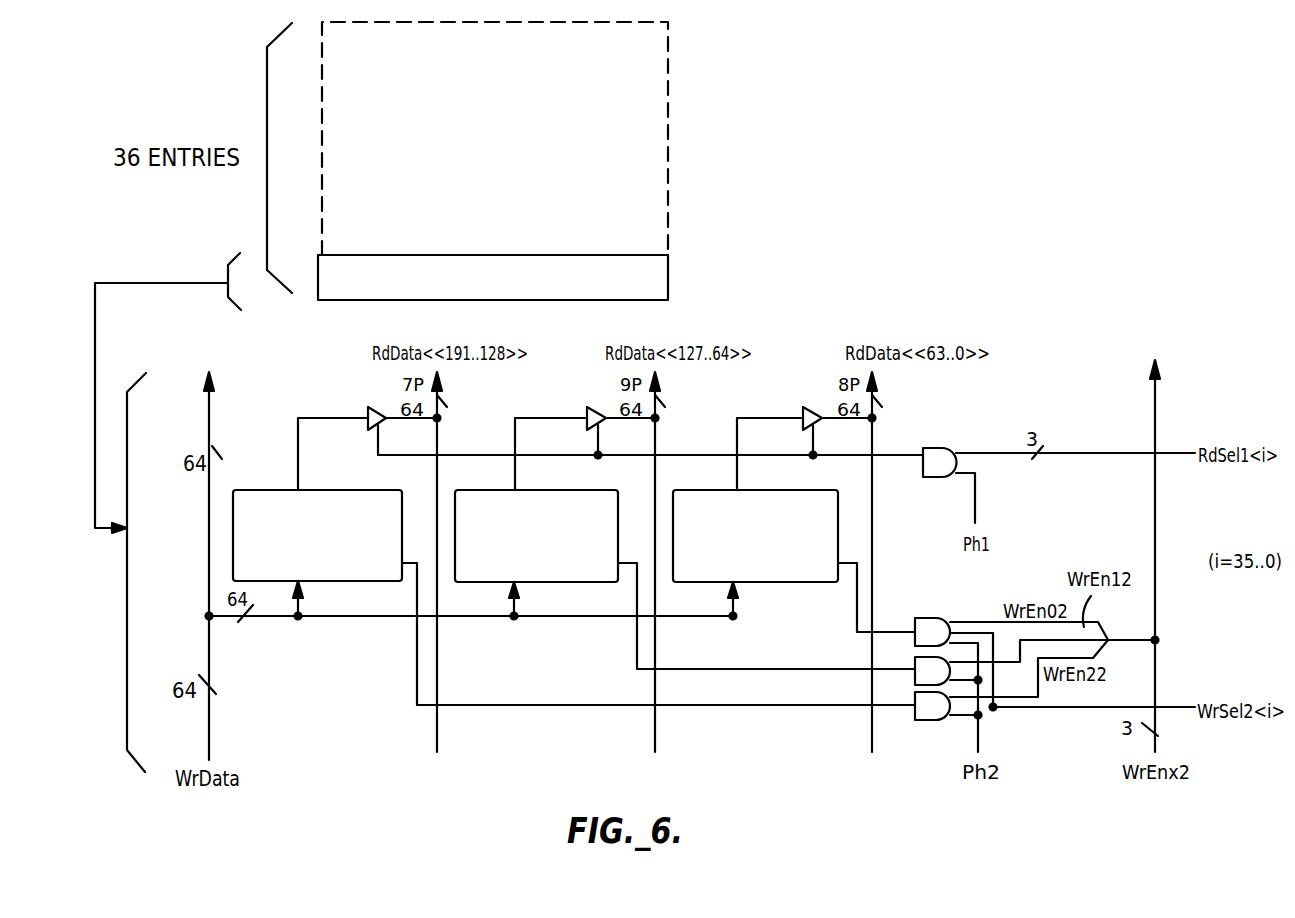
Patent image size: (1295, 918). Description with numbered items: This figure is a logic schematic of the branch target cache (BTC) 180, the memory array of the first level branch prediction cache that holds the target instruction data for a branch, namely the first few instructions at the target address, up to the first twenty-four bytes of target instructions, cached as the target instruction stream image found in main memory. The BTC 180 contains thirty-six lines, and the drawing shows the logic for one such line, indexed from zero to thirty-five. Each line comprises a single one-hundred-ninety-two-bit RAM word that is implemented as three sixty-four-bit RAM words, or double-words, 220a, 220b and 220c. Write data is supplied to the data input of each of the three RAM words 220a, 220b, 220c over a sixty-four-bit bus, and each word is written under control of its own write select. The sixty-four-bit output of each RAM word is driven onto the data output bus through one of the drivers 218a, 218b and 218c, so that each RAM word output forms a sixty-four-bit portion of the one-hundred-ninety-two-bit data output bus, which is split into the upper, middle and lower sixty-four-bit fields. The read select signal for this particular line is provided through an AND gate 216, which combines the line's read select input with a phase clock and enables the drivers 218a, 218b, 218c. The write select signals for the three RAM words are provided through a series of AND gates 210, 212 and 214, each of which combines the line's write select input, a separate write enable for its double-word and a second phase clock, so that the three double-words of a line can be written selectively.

The branch target cache 180 is at (296, 815).
The AND gate 210 is at (919, 720).
The AND gate 212 is at (916, 660).
The AND gate 214 is at (938, 618).
The AND gate 216 is at (937, 448).
The driver 218a is at (368, 412).
The driver 218b is at (587, 411).
The driver 218c is at (803, 411).
The 64-bit RAM word 220a is at (370, 490).
The 64-bit RAM word 220b is at (552, 490).
The 64-bit RAM word 220c is at (768, 490).